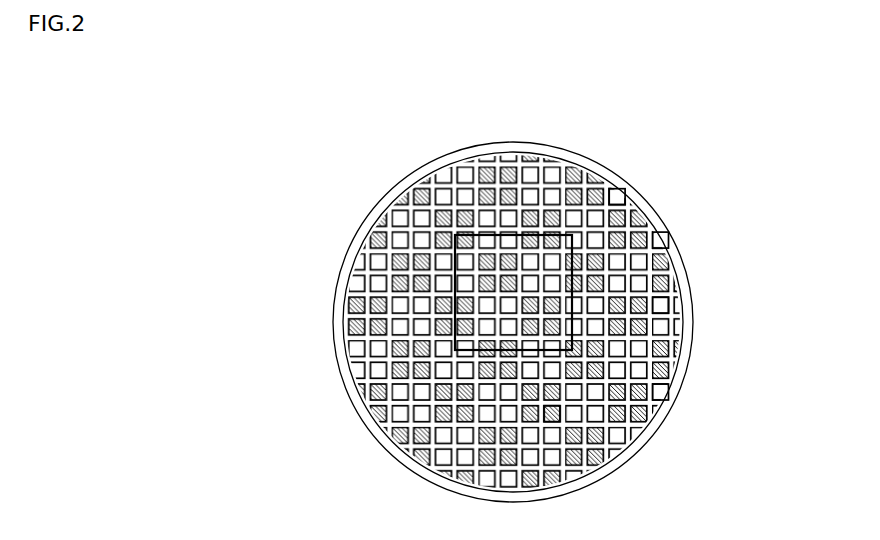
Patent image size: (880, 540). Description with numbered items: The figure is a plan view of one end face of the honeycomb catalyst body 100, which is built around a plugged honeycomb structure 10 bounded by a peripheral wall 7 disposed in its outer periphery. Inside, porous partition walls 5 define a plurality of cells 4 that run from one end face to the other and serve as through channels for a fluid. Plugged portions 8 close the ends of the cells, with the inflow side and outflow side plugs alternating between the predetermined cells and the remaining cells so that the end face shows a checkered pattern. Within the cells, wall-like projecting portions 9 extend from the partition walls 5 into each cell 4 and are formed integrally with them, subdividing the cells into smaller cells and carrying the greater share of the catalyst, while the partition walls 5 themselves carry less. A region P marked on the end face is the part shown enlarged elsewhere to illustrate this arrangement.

The honeycomb catalyst body 100 is at (855, 104).
The plugged honeycomb structure 10 is at (690, 365).
The peripheral wall 7 is at (537, 147).
The cell 4 is at (613, 194).
The projecting portion 9 is at (653, 238).
The partition wall 5 is at (650, 305).
The plugged portion 8 is at (560, 413).
The region P is at (455, 283).